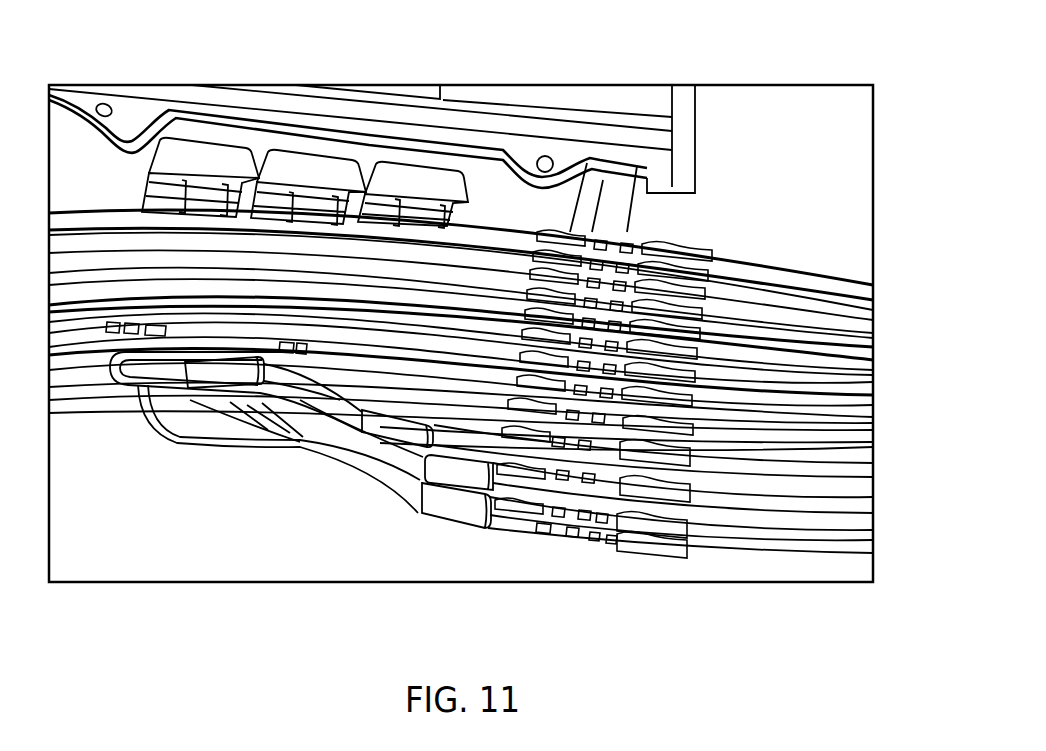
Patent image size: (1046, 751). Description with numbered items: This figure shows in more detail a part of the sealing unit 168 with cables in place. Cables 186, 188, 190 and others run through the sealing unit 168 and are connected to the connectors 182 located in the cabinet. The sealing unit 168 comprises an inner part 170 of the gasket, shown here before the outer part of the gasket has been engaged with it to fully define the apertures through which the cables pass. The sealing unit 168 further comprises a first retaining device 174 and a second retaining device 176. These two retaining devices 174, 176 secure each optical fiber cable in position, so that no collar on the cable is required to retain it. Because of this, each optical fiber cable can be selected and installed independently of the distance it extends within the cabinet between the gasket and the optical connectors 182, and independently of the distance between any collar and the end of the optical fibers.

The sealing unit 168 is at (457, 556).
The inner part of the gasket 170 is at (578, 512).
The first retaining device 174 is at (527, 503).
The second retaining device 176 is at (653, 522).
The connectors 182 is at (428, 188).
The cable 186 is at (864, 388).
The cable 188 is at (863, 412).
The cable 190 is at (867, 433).